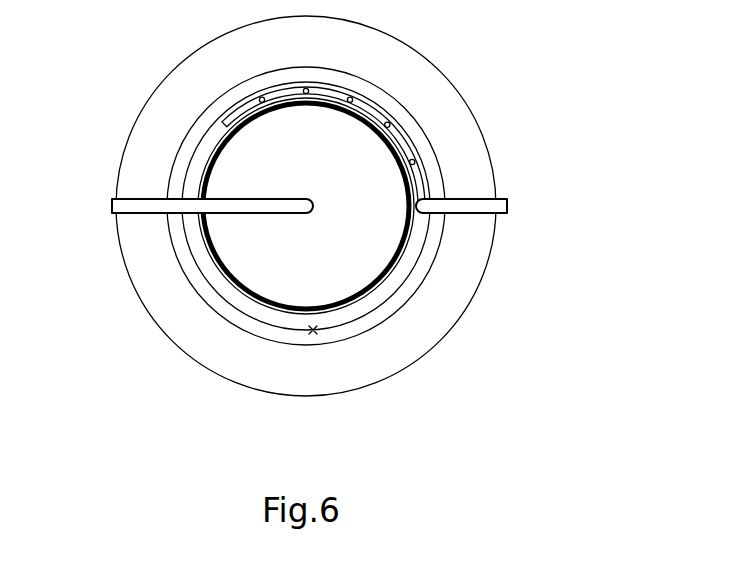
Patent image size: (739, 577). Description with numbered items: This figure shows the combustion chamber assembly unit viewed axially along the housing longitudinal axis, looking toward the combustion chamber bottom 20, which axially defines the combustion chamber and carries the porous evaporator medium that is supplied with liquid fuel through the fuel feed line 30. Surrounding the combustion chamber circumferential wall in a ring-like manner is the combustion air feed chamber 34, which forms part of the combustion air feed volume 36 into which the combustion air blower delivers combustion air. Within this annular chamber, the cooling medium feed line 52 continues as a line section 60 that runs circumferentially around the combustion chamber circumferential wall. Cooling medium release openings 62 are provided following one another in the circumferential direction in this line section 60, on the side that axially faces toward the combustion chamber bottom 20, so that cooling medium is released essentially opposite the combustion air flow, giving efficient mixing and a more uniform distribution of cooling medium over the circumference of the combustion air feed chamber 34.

The combustion chamber bottom 20 is at (270, 272).
The fuel feed line 30 is at (145, 217).
The combustion air feed chamber 34 is at (393, 285).
The combustion air feed volume 36 is at (313, 330).
The cooling medium feed line 52 is at (470, 213).
The line section 60 is at (413, 145).
The cooling medium release openings 62 is at (357, 100).